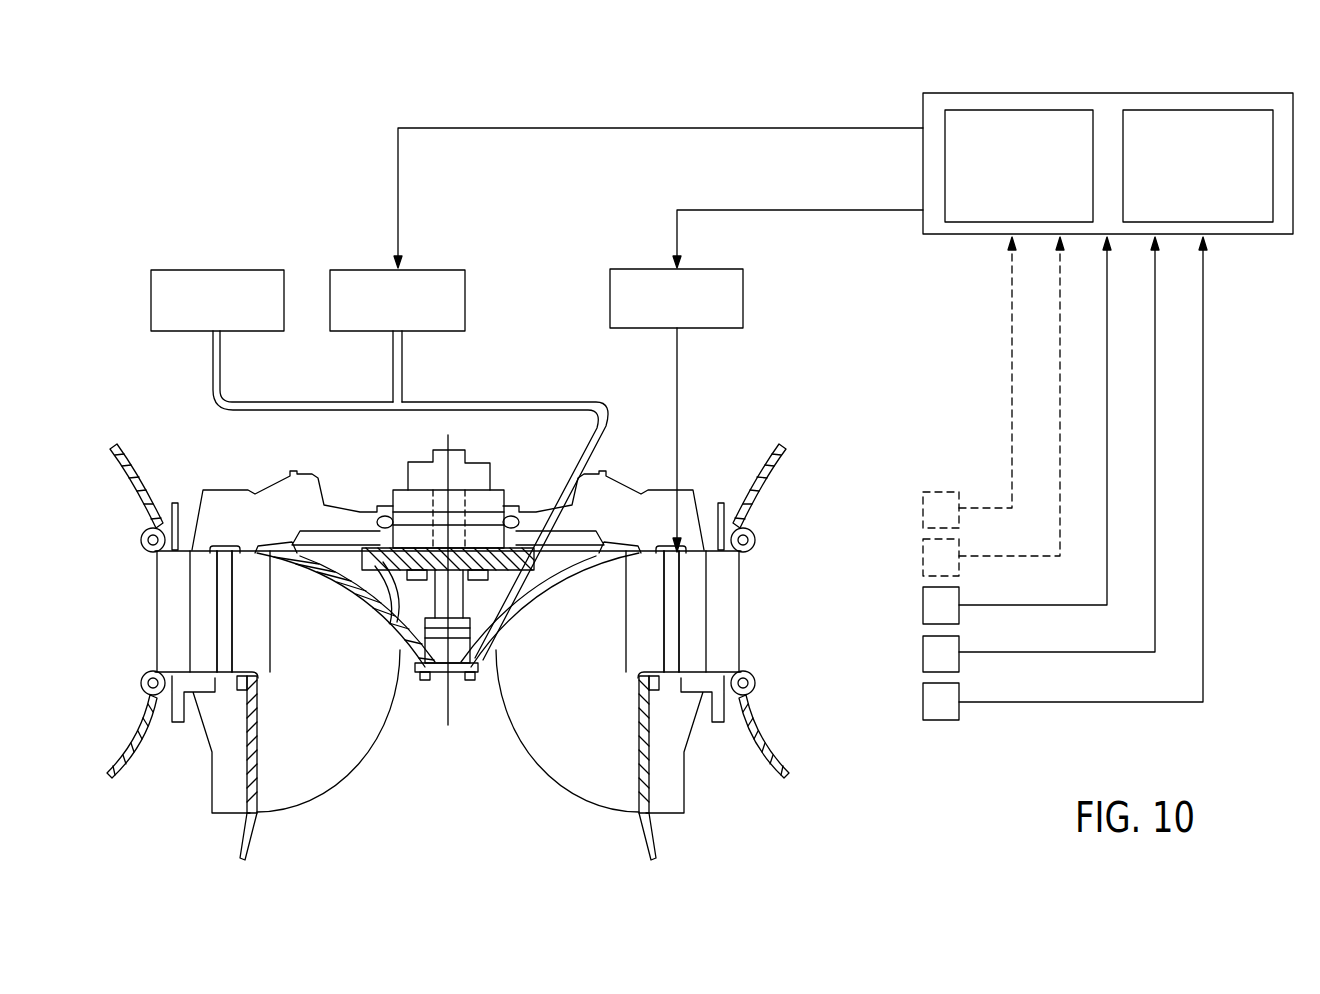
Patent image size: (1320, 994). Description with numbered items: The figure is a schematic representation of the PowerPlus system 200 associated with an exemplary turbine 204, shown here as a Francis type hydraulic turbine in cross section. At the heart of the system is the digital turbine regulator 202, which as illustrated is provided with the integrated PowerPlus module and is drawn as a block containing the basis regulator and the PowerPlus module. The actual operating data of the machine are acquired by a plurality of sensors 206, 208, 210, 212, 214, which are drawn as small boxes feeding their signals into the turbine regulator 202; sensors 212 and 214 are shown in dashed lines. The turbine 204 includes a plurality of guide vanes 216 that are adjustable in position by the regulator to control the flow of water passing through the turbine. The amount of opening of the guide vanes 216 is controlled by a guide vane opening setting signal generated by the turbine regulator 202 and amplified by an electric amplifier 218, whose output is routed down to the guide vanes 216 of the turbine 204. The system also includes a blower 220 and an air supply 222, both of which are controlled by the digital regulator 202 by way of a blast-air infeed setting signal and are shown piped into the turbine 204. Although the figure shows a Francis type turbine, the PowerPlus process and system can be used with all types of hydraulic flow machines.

The PowerPlus system 200 is at (845, 85).
The digital turbine regulator 202 is at (1107, 92).
The turbine 204 is at (382, 477).
The sensor 206 is at (921, 706).
The sensor 208 is at (921, 656).
The sensor 210 is at (921, 609).
The sensor 212 is at (921, 559).
The sensor 214 is at (921, 512).
The guide vanes 216 is at (232, 618).
The electric amplifier 218 is at (692, 330).
The blower 220 is at (330, 302).
The air supply 222 is at (151, 303).